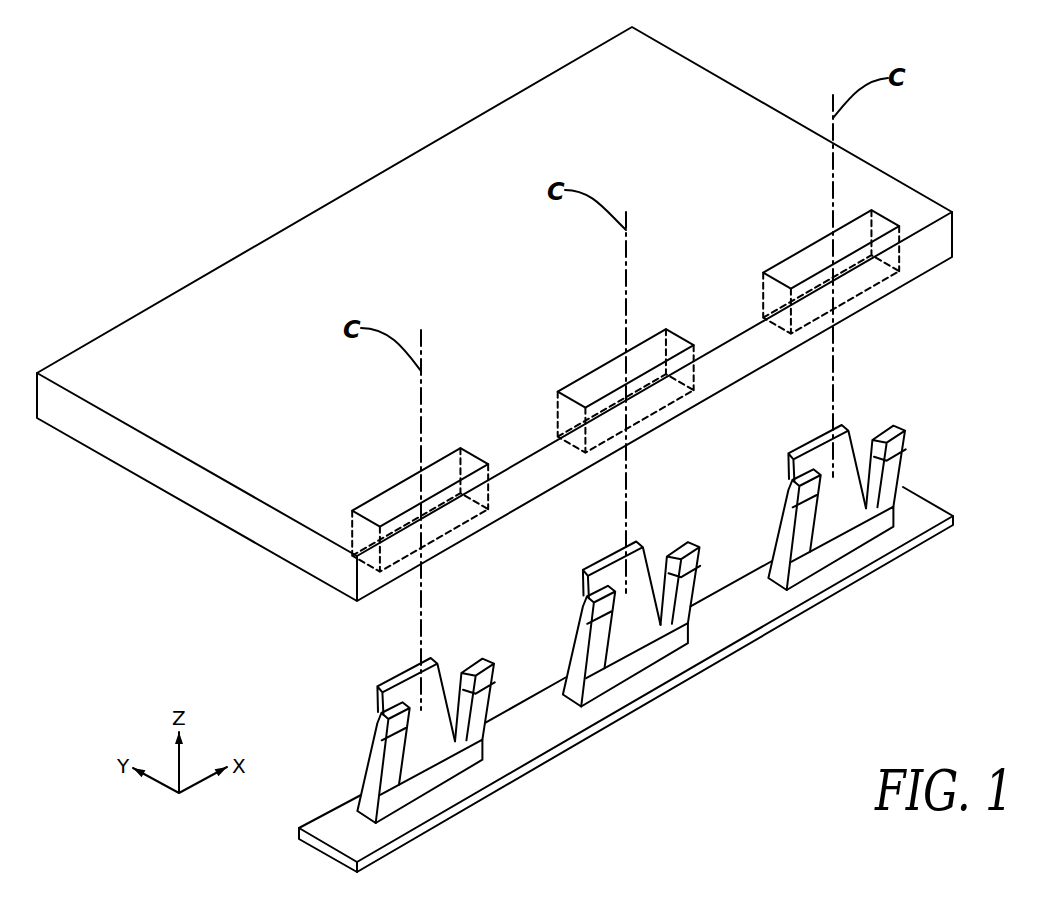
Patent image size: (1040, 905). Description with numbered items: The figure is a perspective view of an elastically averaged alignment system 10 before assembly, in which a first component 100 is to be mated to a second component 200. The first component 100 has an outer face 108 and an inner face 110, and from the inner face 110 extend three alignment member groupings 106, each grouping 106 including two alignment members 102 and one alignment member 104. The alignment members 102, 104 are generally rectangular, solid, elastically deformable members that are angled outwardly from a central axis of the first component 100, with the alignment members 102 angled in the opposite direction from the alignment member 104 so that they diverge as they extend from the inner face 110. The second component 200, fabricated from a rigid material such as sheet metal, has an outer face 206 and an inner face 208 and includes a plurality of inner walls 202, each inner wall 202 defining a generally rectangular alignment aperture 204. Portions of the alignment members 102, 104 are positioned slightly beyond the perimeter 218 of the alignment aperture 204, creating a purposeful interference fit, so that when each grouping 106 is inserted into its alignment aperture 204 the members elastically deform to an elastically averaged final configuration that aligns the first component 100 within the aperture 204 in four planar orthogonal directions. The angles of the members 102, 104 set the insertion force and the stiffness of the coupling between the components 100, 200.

The elastically averaged alignment system 10 is at (246, 137).
The first component 100 is at (927, 446).
The alignment member 102 is at (893, 426).
The alignment member 104 is at (814, 444).
The alignment member grouping 106 is at (657, 661).
The outer face 108 is at (922, 541).
The inner face 110 is at (917, 518).
The second component 200 is at (804, 100).
The inner wall 202 is at (849, 236).
The alignment aperture 204 is at (793, 250).
The outer face 206 is at (916, 212).
The inner face 208 is at (922, 268).
The perimeter 218 is at (573, 381).